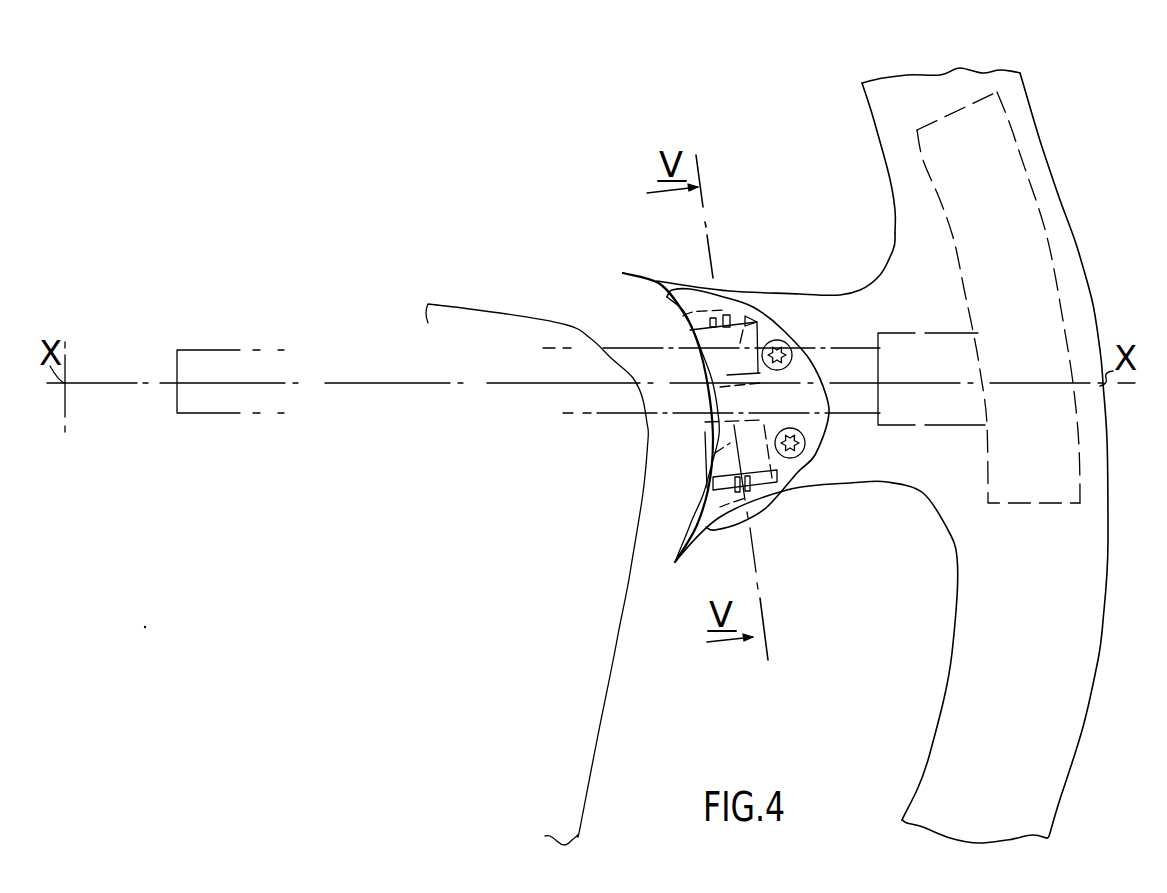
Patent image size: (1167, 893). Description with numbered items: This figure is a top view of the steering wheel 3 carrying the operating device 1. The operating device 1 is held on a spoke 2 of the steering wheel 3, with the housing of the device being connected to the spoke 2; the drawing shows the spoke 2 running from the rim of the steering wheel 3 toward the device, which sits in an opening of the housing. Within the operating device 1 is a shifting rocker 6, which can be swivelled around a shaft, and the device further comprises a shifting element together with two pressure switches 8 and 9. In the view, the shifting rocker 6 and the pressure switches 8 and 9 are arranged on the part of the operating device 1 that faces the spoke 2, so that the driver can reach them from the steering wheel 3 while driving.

The operating device 1 is at (683, 440).
The spoke 2 is at (850, 357).
The steering wheel 3 is at (1085, 183).
The shifting rocker 6 is at (817, 428).
The pressure switch 8 is at (752, 320).
The pressure switch 9 is at (700, 472).